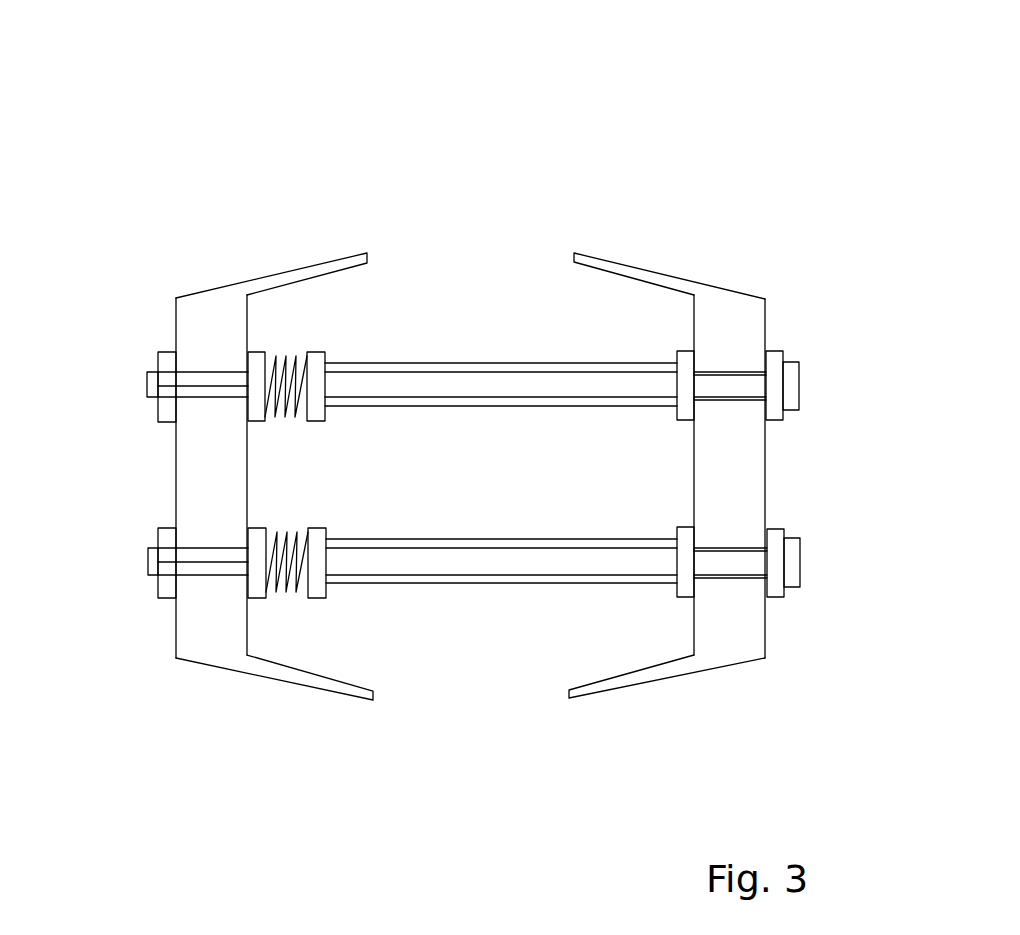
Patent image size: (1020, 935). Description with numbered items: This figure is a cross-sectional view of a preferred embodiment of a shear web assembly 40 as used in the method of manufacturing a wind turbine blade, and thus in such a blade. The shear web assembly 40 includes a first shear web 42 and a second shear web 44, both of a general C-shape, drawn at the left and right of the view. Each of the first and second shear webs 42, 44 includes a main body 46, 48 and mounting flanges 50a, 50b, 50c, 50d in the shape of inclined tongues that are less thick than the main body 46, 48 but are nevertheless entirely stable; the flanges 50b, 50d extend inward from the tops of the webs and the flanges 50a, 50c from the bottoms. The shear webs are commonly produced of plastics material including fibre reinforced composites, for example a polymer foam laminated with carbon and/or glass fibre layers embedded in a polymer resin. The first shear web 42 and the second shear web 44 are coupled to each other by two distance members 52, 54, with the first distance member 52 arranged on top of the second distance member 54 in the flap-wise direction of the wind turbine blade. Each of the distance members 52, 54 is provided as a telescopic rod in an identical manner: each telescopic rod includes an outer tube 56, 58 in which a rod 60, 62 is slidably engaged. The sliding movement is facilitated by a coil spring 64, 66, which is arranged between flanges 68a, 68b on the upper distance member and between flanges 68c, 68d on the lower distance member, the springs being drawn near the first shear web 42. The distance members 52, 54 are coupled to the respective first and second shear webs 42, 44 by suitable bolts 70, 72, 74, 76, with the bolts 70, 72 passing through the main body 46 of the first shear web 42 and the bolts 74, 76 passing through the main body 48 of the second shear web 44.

The shear web assembly 40 is at (461, 140).
The first shear web 42 is at (221, 260).
The second shear web 44 is at (732, 262).
The main body 46 is at (183, 457).
The main body 48 is at (748, 470).
The mounting flange 50a is at (270, 666).
The mounting flange 50b is at (285, 283).
The mounting flange 50c is at (653, 677).
The mounting flange 50d is at (663, 283).
The first distance member 52 is at (480, 340).
The second distance member 54 is at (488, 524).
The outer tube 56 is at (547, 365).
The outer tube 58 is at (558, 537).
The rod 60 is at (643, 390).
The rod 62 is at (598, 562).
The coil spring 64 is at (283, 423).
The coil spring 66 is at (293, 587).
The flange 68a is at (313, 367).
The flange 68b is at (256, 367).
The flange 68c is at (320, 592).
The flange 68d is at (259, 576).
The bolt 70 is at (147, 387).
The bolt 72 is at (155, 565).
The bolt 74 is at (793, 388).
The bolt 76 is at (797, 568).